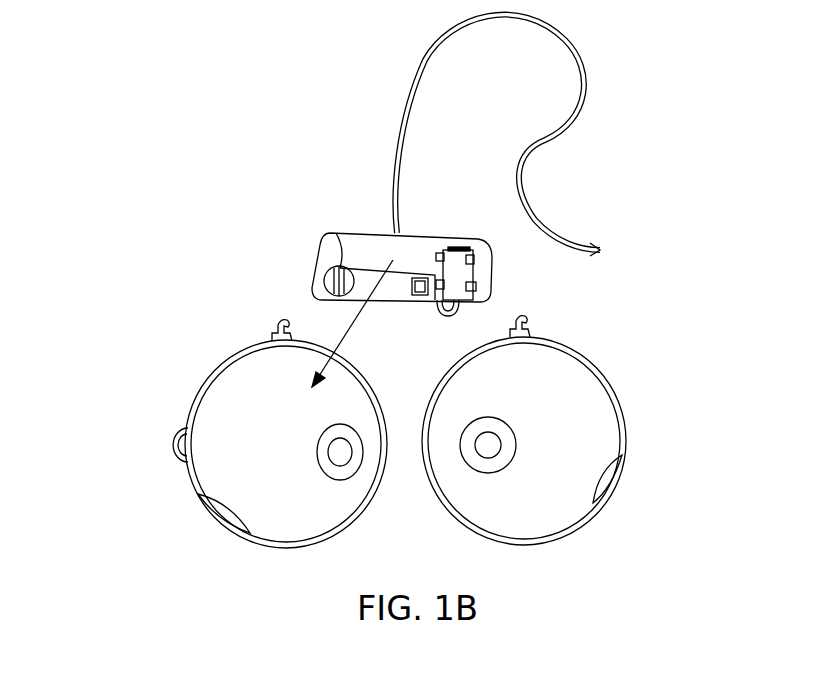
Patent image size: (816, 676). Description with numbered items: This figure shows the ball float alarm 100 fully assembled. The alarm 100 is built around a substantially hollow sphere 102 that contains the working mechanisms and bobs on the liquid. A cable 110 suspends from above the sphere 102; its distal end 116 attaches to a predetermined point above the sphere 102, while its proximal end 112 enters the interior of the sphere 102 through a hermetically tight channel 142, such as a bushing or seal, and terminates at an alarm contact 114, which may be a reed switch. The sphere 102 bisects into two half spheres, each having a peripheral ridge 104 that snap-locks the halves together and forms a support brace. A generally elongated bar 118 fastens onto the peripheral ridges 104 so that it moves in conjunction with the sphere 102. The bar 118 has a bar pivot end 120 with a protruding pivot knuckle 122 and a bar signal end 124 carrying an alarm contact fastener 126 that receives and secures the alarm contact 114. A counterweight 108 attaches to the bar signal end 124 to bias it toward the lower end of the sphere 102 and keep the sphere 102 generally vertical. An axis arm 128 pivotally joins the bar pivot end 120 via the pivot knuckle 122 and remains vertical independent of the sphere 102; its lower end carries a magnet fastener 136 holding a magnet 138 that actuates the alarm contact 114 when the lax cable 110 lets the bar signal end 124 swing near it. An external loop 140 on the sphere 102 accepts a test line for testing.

The alarm 100 is at (115, 152).
The sphere 102 is at (205, 372).
The peripheral ridge 104 is at (218, 497).
The counterweight 108 is at (358, 470).
The cable 110 is at (428, 58).
The proximal end 112 is at (450, 313).
The alarm contact 114 is at (448, 250).
The distal end 116 is at (603, 251).
The bar 118 is at (358, 241).
The bar pivot end 120 is at (316, 258).
The pivot knuckle 122 is at (337, 268).
The bar signal end 124 is at (478, 240).
The alarm contact fastener 126 is at (471, 261).
The axis arm 128 is at (385, 295).
The magnet fastener 136 is at (432, 300).
The magnet 138 is at (408, 276).
The external loop 140 is at (165, 447).
The hermetically tight channel 142 is at (275, 327).